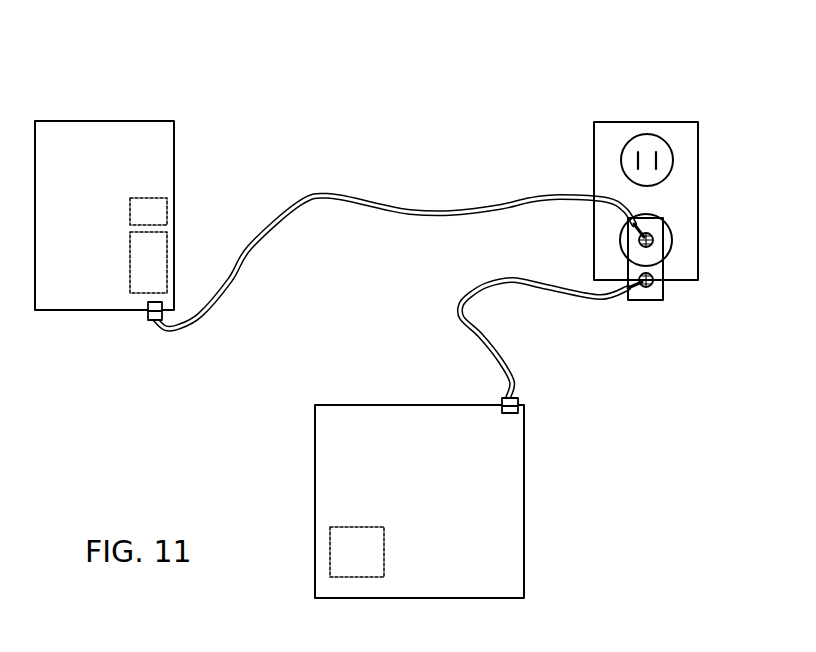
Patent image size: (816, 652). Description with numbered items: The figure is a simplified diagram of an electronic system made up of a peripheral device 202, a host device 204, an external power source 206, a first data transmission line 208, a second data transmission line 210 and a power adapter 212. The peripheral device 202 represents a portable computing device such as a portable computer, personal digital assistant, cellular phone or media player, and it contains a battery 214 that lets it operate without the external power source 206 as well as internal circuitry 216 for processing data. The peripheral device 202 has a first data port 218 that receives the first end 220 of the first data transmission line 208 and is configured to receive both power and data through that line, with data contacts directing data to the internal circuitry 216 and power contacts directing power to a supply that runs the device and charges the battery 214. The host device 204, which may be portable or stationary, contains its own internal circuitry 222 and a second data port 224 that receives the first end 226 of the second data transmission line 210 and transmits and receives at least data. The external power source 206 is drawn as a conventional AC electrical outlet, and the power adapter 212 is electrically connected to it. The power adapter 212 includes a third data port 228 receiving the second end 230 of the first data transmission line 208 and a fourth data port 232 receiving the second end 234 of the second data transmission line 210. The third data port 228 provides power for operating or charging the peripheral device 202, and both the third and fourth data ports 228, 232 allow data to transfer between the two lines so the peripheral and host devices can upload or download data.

The peripheral device 202 is at (146, 160).
The host device 204 is at (482, 452).
The external power source 206 is at (602, 147).
The first data transmission line 208 is at (347, 195).
The second data transmission line 210 is at (482, 285).
The power adapter 212 is at (657, 225).
The battery 214 is at (147, 249).
The internal circuitry 216 is at (148, 209).
The first data port 218 is at (148, 304).
The first end 220 is at (153, 321).
The internal circuitry 222 is at (340, 560).
The second data port 224 is at (522, 413).
The first end 226 is at (518, 400).
The third data port 228 is at (661, 248).
The second end 230 is at (655, 237).
The fourth data port 232 is at (650, 289).
The second end 234 is at (663, 283).